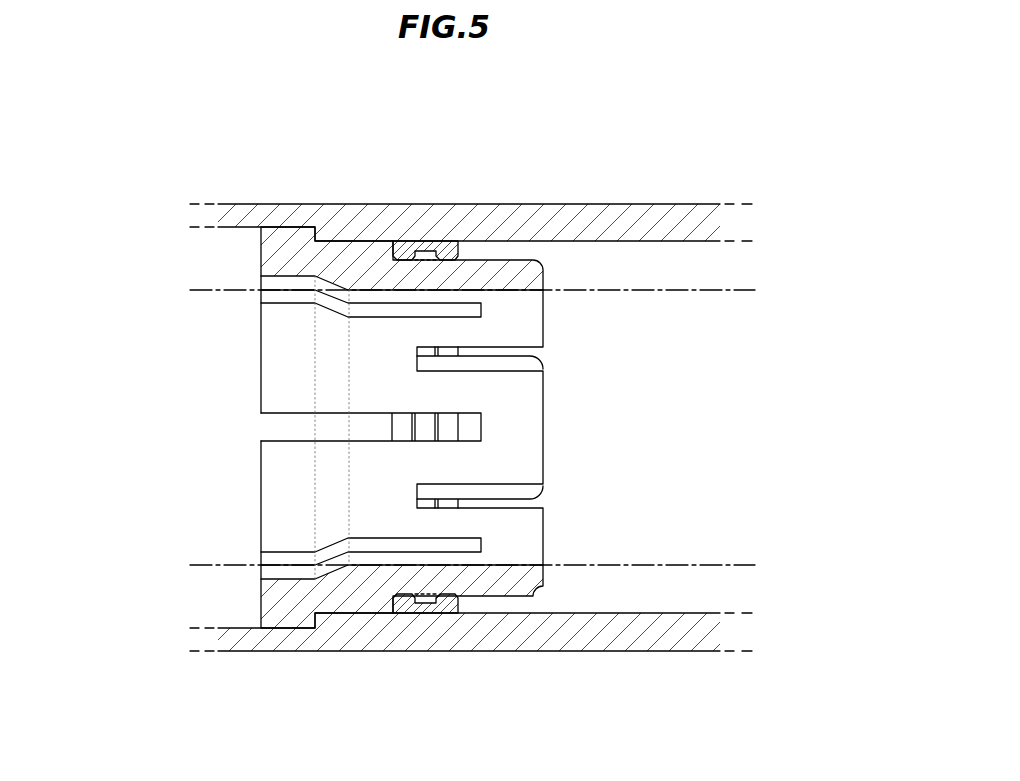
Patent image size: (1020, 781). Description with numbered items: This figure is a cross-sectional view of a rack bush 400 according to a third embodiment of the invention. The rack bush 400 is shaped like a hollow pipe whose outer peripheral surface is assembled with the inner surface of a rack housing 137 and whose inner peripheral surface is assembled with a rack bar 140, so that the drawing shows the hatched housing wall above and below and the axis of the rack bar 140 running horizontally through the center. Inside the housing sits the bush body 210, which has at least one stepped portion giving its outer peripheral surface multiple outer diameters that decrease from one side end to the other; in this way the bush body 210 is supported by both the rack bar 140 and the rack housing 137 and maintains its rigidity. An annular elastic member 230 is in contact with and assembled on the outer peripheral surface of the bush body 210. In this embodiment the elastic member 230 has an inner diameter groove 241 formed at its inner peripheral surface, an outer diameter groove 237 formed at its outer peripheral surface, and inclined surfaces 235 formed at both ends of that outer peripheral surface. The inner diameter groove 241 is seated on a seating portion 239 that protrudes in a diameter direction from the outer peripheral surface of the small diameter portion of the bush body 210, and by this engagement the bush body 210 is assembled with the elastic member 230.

The rack bush 400 is at (178, 112).
The rack housing 137 is at (577, 212).
The rack bar 140 is at (673, 290).
The bush body 210 is at (233, 390).
The elastic member 230 is at (460, 433).
The inclined surfaces 235 is at (456, 250).
The outer diameter groove 237 is at (428, 614).
The seating portion 239 is at (421, 260).
The inner diameter groove 241 is at (421, 595).